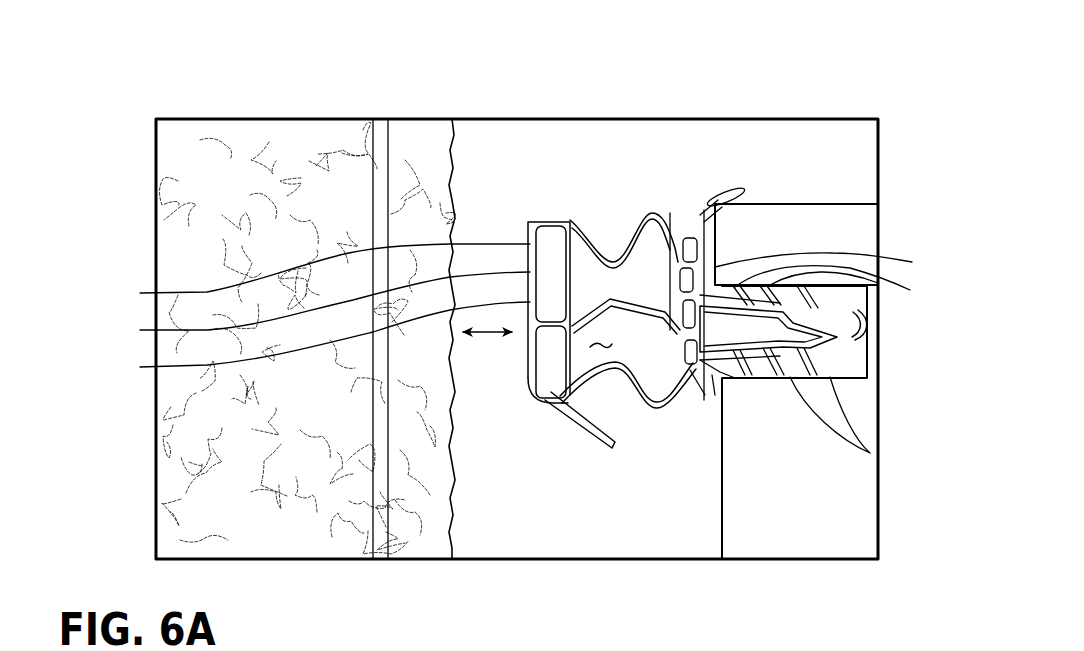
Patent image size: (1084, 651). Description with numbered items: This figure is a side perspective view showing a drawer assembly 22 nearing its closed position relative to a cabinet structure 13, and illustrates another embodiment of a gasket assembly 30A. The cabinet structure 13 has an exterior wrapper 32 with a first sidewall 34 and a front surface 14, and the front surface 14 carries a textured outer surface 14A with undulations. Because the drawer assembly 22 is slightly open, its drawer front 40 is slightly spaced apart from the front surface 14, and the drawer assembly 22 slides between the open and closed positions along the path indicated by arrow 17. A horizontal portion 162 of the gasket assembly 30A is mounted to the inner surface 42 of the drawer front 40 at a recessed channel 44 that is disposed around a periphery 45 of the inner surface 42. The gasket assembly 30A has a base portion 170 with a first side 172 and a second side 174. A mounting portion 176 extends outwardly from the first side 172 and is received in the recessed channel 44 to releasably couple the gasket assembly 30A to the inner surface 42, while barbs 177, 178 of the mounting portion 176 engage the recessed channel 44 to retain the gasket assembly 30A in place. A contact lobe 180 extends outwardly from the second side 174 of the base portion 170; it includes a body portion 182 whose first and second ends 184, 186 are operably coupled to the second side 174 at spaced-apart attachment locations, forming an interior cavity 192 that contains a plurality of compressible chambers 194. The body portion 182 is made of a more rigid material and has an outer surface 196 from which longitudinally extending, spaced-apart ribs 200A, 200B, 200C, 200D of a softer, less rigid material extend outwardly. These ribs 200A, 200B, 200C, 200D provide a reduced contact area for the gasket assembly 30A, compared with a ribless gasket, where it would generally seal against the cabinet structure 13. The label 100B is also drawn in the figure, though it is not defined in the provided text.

The cabinet structure 13 is at (118, 150).
The exterior wrapper 32 is at (144, 237).
The first sidewall 34 is at (248, 162).
The front surface 14 is at (413, 150).
The textured outer surface 14A is at (452, 192).
The rib 200A is at (527, 222).
The rib 200B is at (304, 274).
The rib 200C is at (305, 307).
The rib 200D is at (304, 340).
The arrow 17 is at (487, 335).
The contact lobe 180 is at (577, 214).
The horizontal portion 162 is at (614, 192).
The gasket assembly 30A is at (657, 196).
The second side 174 is at (660, 230).
The second end 186 is at (708, 240).
The periphery 45 is at (717, 198).
The drawer assembly 22 is at (834, 202).
The drawer front 40 is at (838, 238).
The inner surface 42 is at (831, 262).
The barb 177 is at (844, 287).
The mounting portion 176 is at (840, 313).
The recessed channel 44 is at (845, 377).
The barb 178 is at (757, 377).
The first side 172 is at (748, 378).
The base portion 170 is at (727, 387).
The first end 184 is at (708, 395).
The compressible chambers 194 is at (692, 398).
The fluid path 100B is at (604, 401).
The interior cavity 192 is at (598, 355).
The body portion 182 is at (548, 393).
The outer surface 196 is at (527, 350).